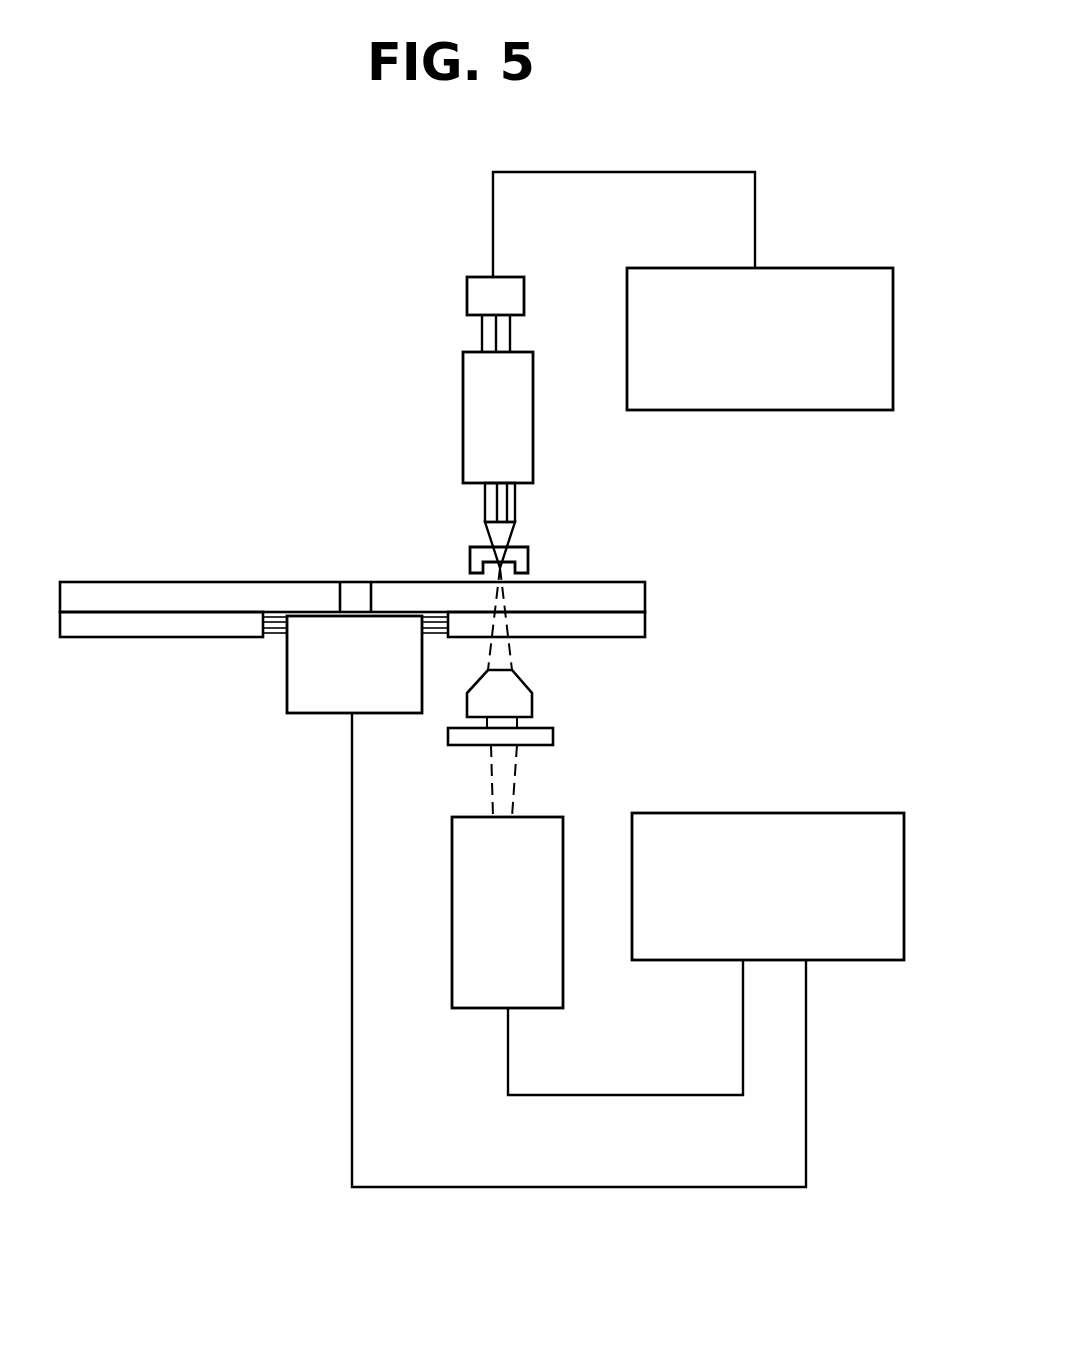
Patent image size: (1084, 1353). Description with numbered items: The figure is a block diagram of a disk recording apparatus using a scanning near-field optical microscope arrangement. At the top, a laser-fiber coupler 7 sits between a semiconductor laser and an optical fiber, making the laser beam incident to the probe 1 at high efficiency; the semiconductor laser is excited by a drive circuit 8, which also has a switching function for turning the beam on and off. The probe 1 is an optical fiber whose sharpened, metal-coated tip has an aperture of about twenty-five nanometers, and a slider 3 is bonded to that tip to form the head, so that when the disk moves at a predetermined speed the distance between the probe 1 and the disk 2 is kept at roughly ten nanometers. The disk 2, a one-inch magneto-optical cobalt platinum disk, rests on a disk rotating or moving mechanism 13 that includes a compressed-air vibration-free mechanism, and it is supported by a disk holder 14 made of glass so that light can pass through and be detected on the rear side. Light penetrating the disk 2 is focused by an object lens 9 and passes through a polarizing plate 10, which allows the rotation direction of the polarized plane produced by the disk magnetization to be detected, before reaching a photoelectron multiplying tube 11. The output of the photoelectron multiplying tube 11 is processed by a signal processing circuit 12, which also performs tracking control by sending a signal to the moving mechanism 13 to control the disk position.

The probe 1 is at (485, 506).
The disk 2 is at (190, 582).
The slider 3 is at (528, 555).
The laser-fiber coupler 7 is at (468, 420).
The drive circuit 8 is at (818, 268).
The object lens 9 is at (508, 650).
The polarizing plate 10 is at (534, 694).
The photoelectron multiplying tube 11 is at (452, 972).
The signal processing circuit 12 is at (813, 818).
The moving mechanism 13 is at (290, 685).
The disk holder 14 is at (648, 621).